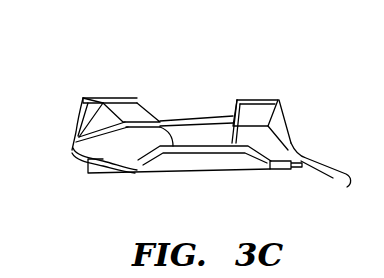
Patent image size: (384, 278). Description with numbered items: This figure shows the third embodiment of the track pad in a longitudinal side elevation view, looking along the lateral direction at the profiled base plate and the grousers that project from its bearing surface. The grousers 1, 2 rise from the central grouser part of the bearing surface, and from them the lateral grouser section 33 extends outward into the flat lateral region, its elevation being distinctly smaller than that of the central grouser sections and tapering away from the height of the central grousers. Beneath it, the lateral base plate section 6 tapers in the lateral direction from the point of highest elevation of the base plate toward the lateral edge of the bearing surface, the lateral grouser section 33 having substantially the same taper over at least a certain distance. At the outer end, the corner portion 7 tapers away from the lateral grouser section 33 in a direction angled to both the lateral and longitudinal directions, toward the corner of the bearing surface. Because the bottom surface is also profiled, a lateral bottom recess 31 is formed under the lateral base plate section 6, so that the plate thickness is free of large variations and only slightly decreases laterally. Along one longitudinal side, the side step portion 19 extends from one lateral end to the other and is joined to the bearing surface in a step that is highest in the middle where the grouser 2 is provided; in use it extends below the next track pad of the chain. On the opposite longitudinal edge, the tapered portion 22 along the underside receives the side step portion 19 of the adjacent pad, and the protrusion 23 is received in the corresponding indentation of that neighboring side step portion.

The grouser 1 is at (109, 98).
The grouser 2 is at (270, 98).
The lateral base plate section 6 is at (193, 116).
The corner portion 7 is at (80, 117).
The side step portion 19 is at (328, 163).
The tapered portion 22 is at (88, 156).
The protrusion 23 is at (97, 173).
The lateral bottom recess 31 is at (225, 158).
The lateral grouser section 33 is at (138, 115).